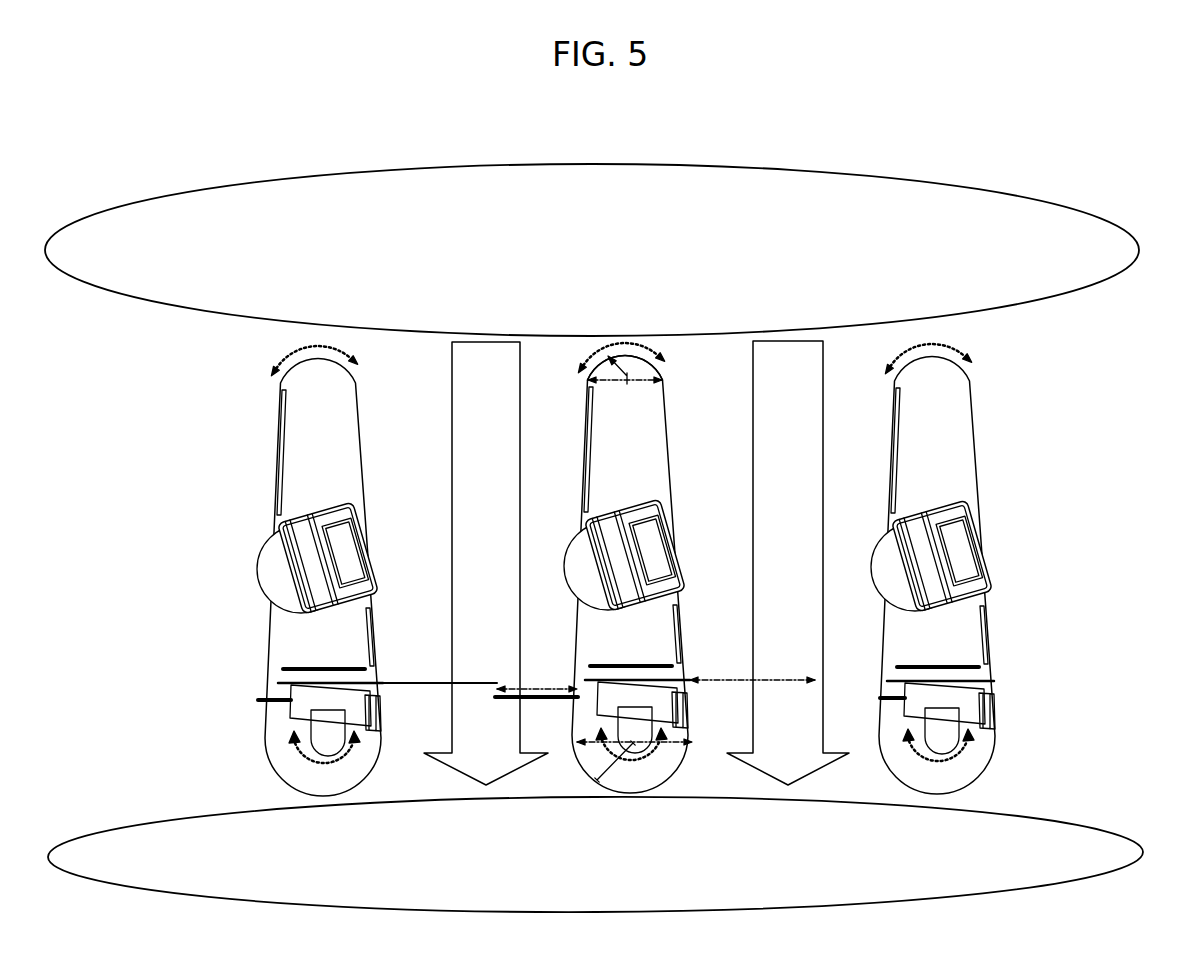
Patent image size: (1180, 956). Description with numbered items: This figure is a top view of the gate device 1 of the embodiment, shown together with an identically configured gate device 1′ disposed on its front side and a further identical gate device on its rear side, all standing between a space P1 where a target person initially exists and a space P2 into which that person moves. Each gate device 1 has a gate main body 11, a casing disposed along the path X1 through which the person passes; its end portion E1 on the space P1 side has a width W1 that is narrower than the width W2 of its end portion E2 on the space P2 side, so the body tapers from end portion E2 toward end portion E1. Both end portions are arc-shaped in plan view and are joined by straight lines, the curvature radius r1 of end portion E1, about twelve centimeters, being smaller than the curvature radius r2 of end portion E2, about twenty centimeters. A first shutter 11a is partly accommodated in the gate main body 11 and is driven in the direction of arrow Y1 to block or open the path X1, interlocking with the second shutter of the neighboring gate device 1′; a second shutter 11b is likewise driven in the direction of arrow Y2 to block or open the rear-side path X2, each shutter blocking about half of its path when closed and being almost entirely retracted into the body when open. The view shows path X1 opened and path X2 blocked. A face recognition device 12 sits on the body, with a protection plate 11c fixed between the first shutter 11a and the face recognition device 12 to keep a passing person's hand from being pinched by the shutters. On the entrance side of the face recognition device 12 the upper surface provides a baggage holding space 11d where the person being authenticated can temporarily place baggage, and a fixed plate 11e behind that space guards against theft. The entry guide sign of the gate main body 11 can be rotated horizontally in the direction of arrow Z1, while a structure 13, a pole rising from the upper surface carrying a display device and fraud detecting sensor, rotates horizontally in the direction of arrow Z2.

The gate device 1 is at (646, 550).
The gate device 1′ is at (1025, 777).
The gate main body 11 is at (665, 574).
The first shutter 11a is at (607, 645).
The second shutter 11b is at (527, 726).
The protection plate 11c is at (703, 614).
The baggage holding space 11d is at (669, 390).
The fixed plate 11e is at (667, 449).
The face recognition device 12 is at (650, 553).
The structure 13 is at (672, 717).
The space P1 is at (128, 300).
The space P2 is at (122, 825).
The end portion E1 is at (620, 343).
The end portion E2 is at (634, 797).
The arrow Z1 direction Z1 is at (612, 358).
The arrow Z2 direction Z2 is at (631, 759).
The path X1 is at (788, 563).
The path X2 is at (486, 563).
The arrow Y1 is at (752, 668).
The arrow Y2 is at (537, 678).
The width W1 is at (625, 393).
The width W2 is at (608, 728).
The curvature radius r1 is at (656, 345).
The curvature radius r2 is at (583, 765).